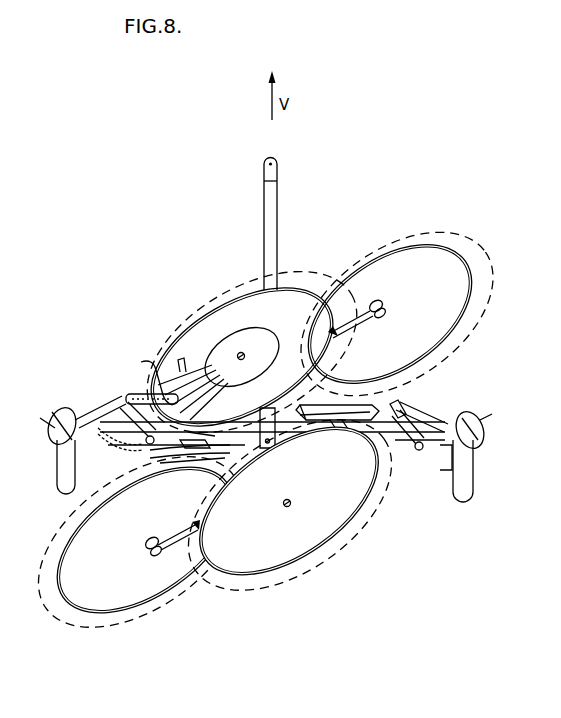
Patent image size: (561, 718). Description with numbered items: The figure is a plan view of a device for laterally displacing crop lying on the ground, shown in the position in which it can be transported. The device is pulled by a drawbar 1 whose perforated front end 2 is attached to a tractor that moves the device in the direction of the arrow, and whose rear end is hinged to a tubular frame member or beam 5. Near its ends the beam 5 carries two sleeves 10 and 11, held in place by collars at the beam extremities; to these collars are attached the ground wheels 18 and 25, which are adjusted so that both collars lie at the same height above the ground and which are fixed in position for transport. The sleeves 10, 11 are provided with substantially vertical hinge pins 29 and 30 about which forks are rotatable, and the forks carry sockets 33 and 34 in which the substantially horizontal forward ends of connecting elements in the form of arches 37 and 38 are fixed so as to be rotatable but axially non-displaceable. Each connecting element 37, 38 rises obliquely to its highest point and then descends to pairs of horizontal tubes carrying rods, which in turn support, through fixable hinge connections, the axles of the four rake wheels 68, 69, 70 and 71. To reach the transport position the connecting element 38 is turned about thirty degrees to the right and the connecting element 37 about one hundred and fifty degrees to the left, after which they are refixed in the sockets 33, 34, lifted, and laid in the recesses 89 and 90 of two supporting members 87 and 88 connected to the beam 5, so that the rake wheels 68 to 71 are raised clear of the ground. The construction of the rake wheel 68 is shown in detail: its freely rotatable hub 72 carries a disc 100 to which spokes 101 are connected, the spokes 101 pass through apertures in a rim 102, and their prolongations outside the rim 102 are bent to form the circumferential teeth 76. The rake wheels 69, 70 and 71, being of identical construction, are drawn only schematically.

The drawbar 1 is at (277, 232).
The front end of drawbar 2 is at (277, 178).
The beam 5 is at (377, 450).
The sleeve 10 is at (440, 456).
The sleeve 11 is at (112, 445).
The ground wheel 18 is at (462, 505).
The ground wheel 25 is at (60, 475).
The hinge pin 29 is at (416, 450).
The hinge pin 30 is at (137, 395).
The socket 33 is at (400, 408).
The socket 34 is at (135, 445).
The connecting element 37 is at (340, 406).
The connecting element 38 is at (165, 470).
The rake wheel 68 is at (213, 315).
The rake wheel 69 is at (445, 245).
The rake wheel 70 is at (352, 518).
The rake wheel 71 is at (152, 598).
The hub 72 is at (254, 356).
The teeth 76 is at (147, 374).
The supporting member 87 is at (327, 430).
The supporting member 88 is at (202, 432).
The recess 89 is at (348, 432).
The recess 90 is at (190, 470).
The disc 100 is at (268, 341).
The spokes 101 is at (193, 381).
The rim 102 is at (241, 297).